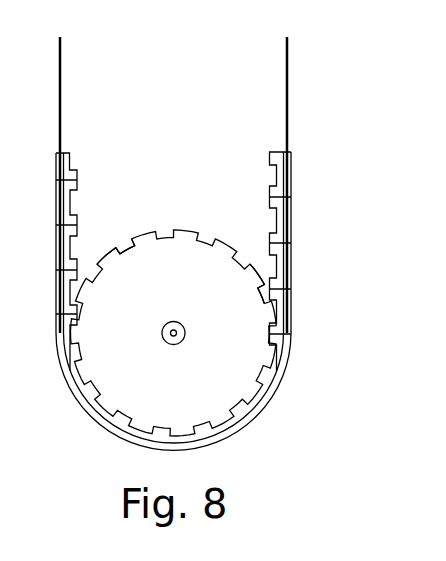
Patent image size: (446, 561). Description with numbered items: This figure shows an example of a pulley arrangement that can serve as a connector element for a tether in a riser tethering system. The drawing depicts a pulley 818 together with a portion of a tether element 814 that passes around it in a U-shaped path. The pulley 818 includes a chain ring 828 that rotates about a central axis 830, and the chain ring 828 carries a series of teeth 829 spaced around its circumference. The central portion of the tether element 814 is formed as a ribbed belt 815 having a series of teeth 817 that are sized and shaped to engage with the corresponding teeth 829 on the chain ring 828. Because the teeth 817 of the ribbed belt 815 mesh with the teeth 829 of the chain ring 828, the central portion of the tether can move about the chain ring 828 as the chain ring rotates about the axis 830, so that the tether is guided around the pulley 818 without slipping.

The tether element 814 is at (288, 84).
The ribbed belt 815 is at (291, 271).
The teeth 817 is at (76, 166).
The pulley 818 is at (217, 270).
The chain ring 828 is at (123, 242).
The teeth 829 is at (265, 283).
The axis 830 is at (165, 338).